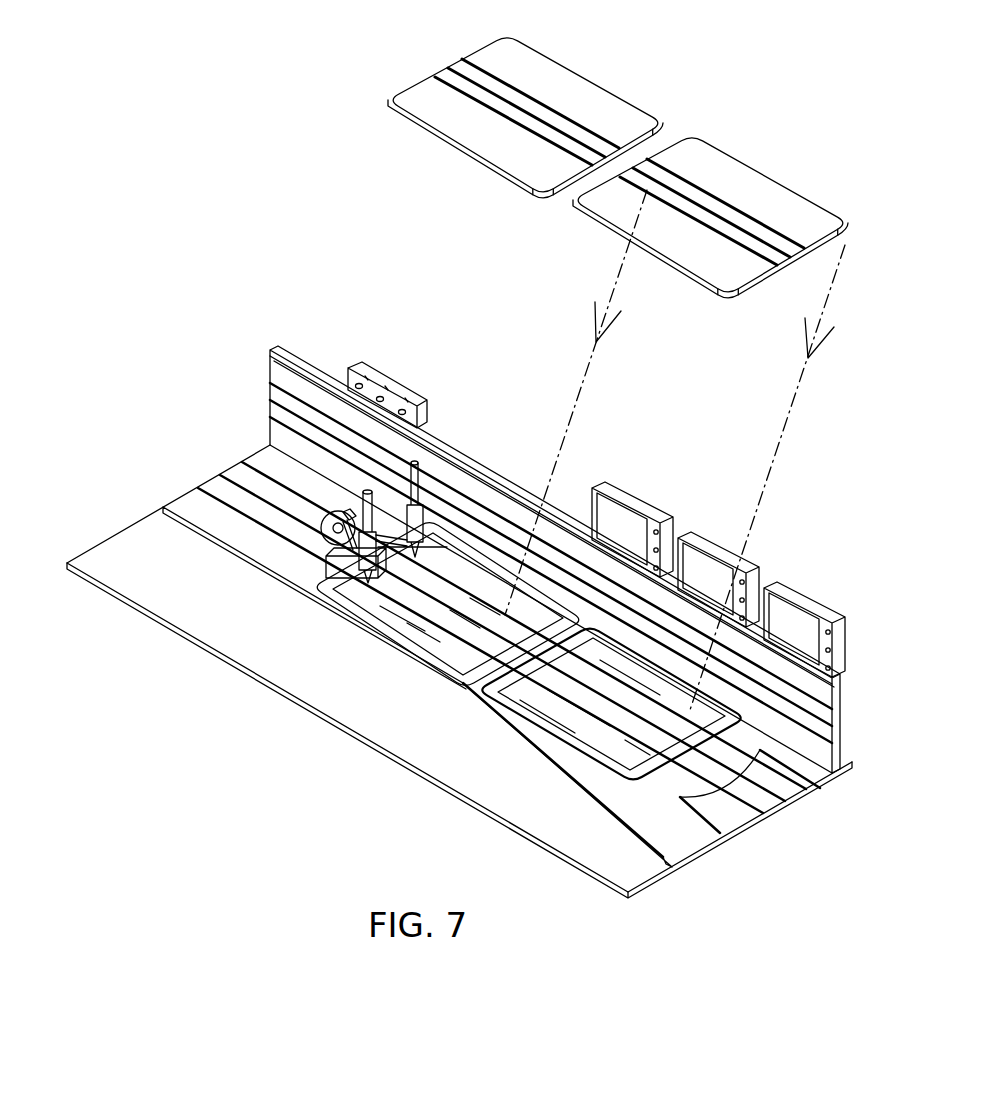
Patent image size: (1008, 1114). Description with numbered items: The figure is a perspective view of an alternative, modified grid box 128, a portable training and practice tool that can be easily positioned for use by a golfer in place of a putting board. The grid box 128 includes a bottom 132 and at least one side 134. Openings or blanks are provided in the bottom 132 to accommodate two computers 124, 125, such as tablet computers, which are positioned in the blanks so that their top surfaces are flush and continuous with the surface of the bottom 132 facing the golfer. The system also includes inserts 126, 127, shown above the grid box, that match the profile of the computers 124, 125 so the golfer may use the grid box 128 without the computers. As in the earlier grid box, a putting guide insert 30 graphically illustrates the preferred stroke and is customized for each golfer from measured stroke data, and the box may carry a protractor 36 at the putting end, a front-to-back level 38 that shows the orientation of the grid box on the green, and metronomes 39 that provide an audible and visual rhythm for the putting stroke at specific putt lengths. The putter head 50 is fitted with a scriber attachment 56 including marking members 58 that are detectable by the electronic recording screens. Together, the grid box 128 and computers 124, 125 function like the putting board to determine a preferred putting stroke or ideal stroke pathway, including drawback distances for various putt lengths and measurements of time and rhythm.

The insert 127 is at (480, 43).
The insert 126 is at (773, 189).
The putting guide insert 30 is at (285, 462).
The front-to-back level 38 is at (396, 366).
The side 134 is at (467, 455).
The scriber attachment 56 is at (447, 547).
The protractor 36 is at (158, 452).
The putter head 50 is at (300, 555).
The marking member 58 is at (388, 578).
The computer 125 is at (452, 652).
The computer 124 is at (532, 692).
The metronome 39 is at (735, 560).
The modified grid box 128 is at (662, 437).
The bottom 132 is at (742, 732).